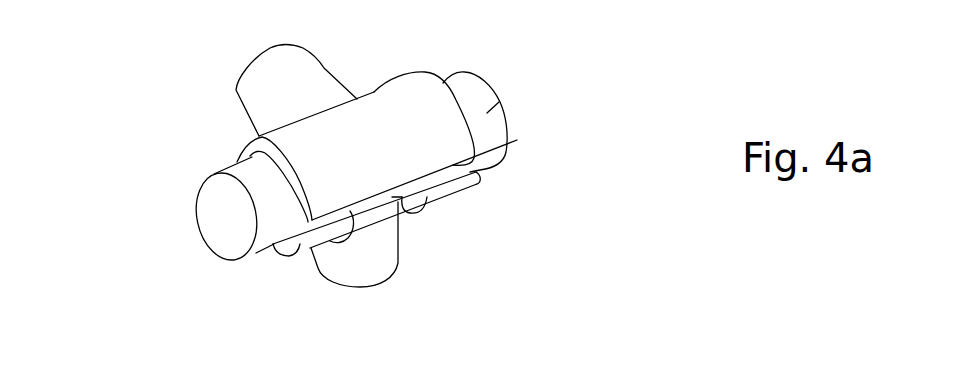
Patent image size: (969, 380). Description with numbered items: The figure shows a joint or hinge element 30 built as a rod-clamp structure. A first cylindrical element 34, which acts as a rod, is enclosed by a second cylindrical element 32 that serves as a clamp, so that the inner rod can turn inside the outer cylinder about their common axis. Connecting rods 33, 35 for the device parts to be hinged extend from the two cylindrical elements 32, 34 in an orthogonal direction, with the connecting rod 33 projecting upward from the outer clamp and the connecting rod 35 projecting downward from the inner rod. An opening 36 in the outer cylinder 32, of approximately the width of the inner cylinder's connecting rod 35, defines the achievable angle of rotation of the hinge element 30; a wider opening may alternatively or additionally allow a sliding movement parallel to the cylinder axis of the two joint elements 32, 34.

The hinge element 30 is at (172, 142).
The second cylindrical element 32 is at (378, 121).
The connecting rod 33 is at (235, 88).
The first cylindrical element 34 is at (492, 90).
The connecting rod 35 is at (377, 257).
The opening 36 is at (384, 215).